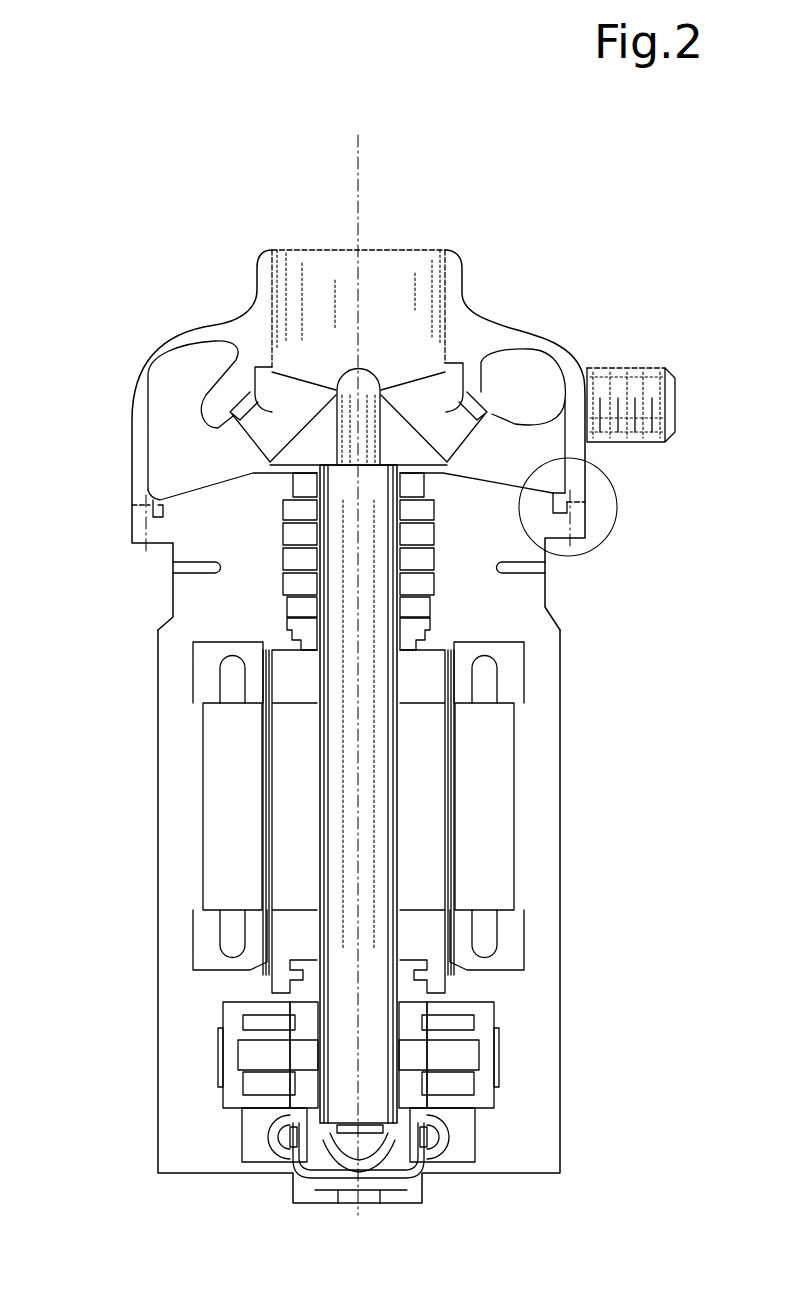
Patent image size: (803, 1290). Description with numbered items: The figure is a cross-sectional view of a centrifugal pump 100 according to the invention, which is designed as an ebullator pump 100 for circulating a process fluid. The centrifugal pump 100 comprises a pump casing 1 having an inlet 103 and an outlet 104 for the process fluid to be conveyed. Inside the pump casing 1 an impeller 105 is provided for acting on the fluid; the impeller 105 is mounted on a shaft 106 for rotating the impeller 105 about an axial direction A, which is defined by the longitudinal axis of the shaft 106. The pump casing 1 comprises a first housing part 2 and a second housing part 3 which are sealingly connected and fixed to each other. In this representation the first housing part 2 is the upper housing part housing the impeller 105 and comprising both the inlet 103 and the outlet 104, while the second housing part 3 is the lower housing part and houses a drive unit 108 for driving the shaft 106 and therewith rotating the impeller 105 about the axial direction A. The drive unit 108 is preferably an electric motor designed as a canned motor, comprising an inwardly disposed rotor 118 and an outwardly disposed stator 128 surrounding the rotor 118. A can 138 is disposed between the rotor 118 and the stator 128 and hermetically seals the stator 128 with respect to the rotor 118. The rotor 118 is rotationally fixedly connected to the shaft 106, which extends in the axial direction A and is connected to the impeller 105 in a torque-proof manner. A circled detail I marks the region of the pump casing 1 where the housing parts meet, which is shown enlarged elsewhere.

The centrifugal pump 100 is at (556, 189).
The pump casing 1 is at (112, 531).
The first housing part 2 is at (155, 362).
The second housing part 3 is at (530, 552).
The inlet 103 is at (422, 250).
The outlet 104 is at (620, 369).
The impeller 105 is at (325, 379).
The shaft 106 is at (390, 612).
The drive unit 108 is at (528, 750).
The rotor 118 is at (430, 872).
The stator 128 is at (217, 747).
The can 138 is at (265, 843).
The axial direction A is at (362, 183).
The detail I is at (630, 506).